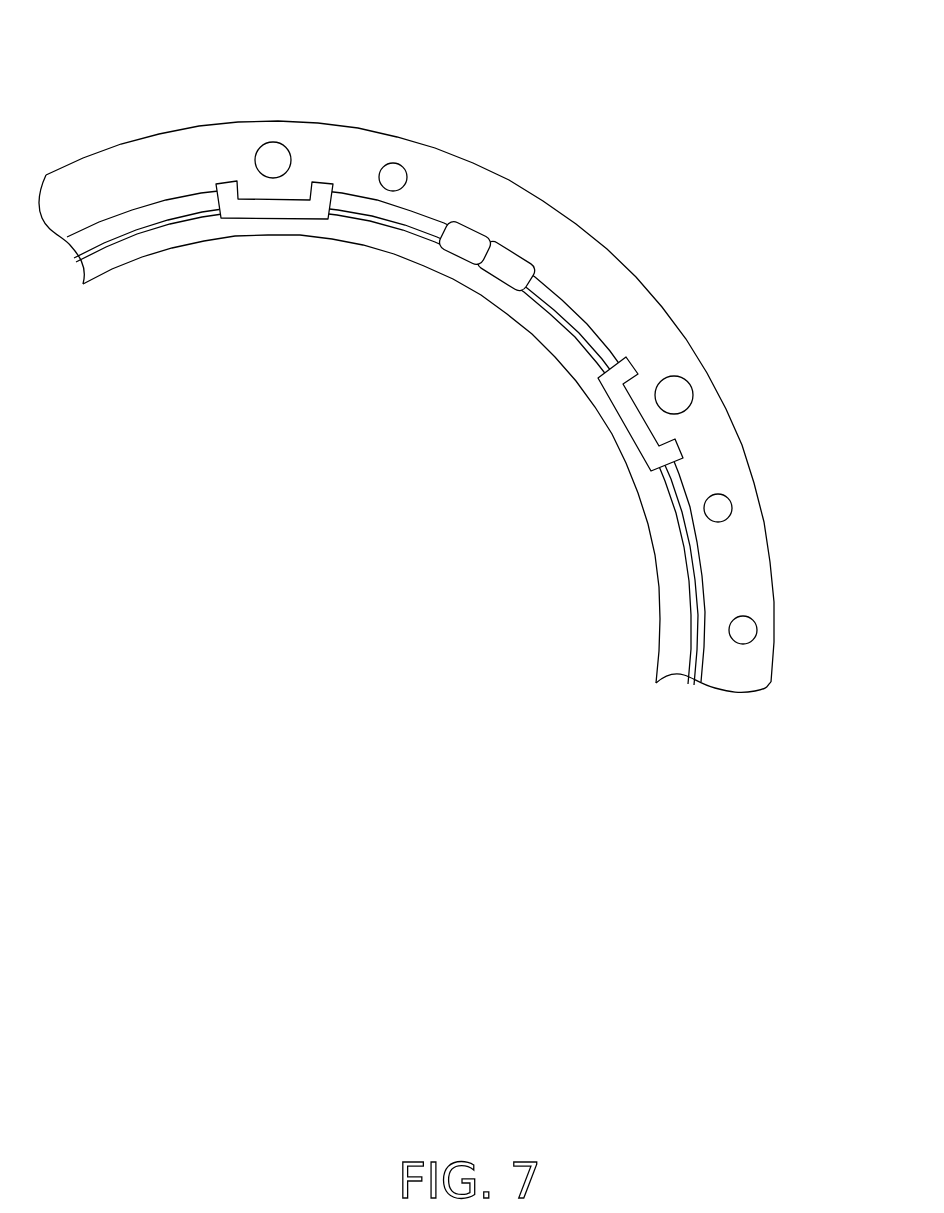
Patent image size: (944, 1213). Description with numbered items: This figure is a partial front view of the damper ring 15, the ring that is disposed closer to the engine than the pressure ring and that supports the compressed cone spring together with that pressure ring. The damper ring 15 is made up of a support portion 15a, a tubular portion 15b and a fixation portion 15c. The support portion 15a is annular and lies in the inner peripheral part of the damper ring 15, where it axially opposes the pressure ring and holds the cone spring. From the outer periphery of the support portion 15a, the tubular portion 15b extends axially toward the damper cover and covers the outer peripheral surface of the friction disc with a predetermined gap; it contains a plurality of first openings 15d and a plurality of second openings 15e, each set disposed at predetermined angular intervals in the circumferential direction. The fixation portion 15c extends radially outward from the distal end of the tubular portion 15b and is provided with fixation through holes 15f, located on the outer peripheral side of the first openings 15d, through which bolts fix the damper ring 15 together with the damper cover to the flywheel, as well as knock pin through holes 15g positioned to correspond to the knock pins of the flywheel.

The damper ring 15 is at (450, 357).
The support portion 15a is at (665, 525).
The tubular portion 15b is at (548, 285).
The fixation portion 15c is at (607, 272).
The first openings 15d is at (283, 201).
The second openings 15e is at (487, 262).
The fixation through holes 15f is at (275, 163).
The knock pin through holes 15g is at (750, 634).